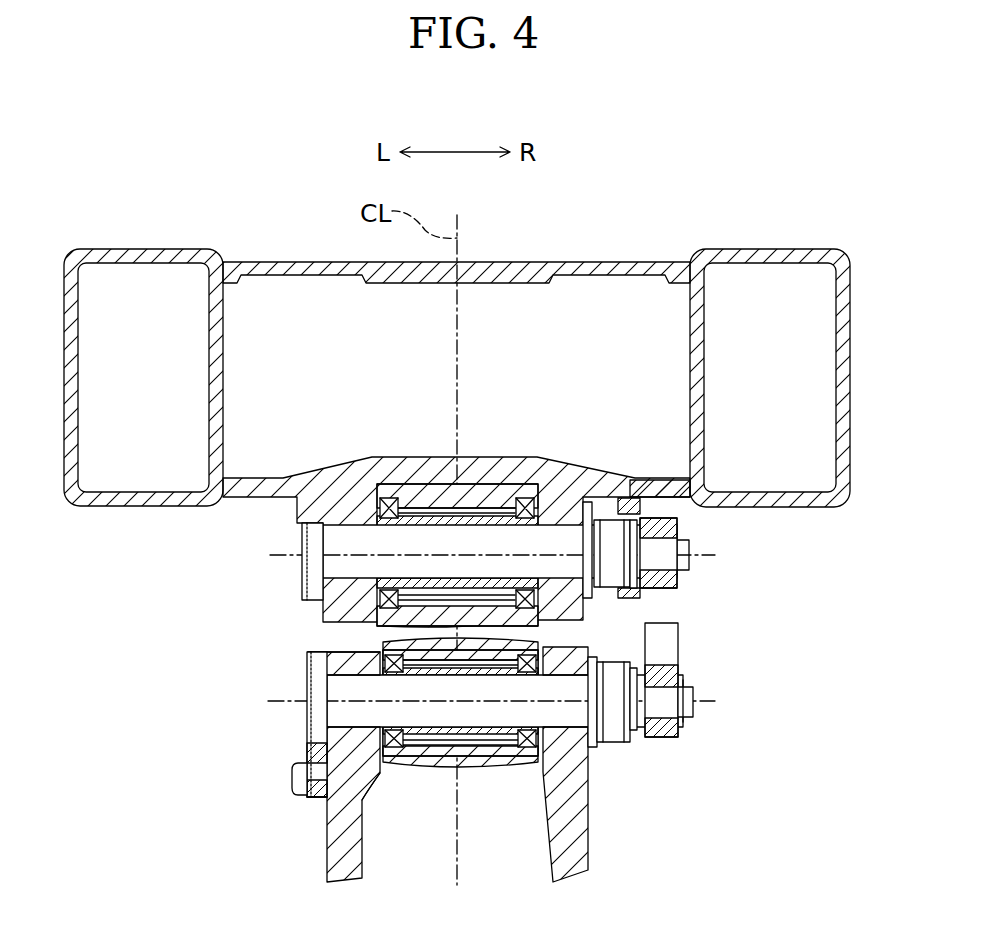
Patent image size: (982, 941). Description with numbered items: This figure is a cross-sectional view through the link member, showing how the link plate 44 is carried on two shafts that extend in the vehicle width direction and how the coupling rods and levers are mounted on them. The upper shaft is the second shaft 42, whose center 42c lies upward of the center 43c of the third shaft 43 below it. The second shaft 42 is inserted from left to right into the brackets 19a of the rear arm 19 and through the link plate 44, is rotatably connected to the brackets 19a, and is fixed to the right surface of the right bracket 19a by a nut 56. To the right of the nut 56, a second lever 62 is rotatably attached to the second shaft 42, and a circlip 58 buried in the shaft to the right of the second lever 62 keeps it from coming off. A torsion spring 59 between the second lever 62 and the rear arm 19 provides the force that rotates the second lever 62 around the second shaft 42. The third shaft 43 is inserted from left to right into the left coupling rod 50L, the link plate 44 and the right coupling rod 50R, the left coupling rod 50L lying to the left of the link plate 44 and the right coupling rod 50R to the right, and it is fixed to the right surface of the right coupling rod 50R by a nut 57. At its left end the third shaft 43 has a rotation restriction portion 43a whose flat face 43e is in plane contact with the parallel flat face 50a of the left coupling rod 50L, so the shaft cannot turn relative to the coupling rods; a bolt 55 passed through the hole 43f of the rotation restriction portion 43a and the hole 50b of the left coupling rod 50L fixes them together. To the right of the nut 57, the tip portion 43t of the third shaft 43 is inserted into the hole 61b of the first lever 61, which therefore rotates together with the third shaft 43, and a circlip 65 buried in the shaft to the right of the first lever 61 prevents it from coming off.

The rear arm 19 is at (520, 262).
The brackets 19a is at (323, 605).
The second shaft 42 is at (428, 545).
The center of the second shaft 42c is at (283, 548).
The third shaft 43 is at (400, 770).
The rotation restriction portion 43a is at (310, 750).
The center of the third shaft 43c is at (275, 715).
The flat face 43e is at (310, 655).
The hole 43f is at (315, 800).
The tip portion 43t is at (640, 715).
The link plate 44 is at (492, 768).
The left coupling rod 50L is at (327, 835).
The right coupling rod 50R is at (588, 830).
The flat face 50a is at (323, 686).
The hole 50b is at (366, 785).
The bolt 55 is at (293, 778).
The nut 56 is at (608, 508).
The nut 57 is at (595, 745).
The circlip 58 is at (677, 578).
The torsion spring 59 is at (632, 505).
The first lever 61 is at (678, 650).
The hole 61b is at (693, 702).
The second lever 62 is at (637, 588).
The circlip 65 is at (690, 732).